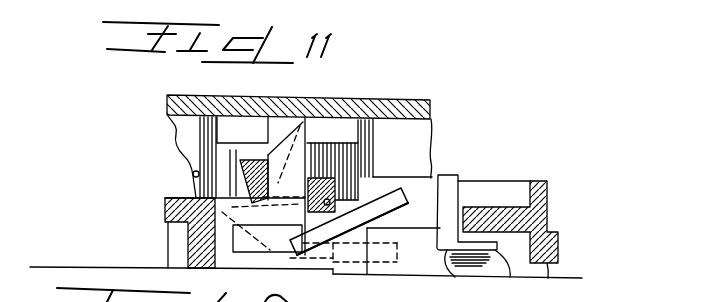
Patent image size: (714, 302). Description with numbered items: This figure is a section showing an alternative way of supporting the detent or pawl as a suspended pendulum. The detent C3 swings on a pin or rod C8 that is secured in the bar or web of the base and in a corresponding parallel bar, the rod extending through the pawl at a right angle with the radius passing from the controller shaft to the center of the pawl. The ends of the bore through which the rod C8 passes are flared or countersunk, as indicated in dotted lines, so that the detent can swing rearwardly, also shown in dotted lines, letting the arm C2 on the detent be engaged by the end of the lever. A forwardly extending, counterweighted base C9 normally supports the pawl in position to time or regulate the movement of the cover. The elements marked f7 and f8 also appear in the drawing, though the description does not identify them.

The arm C2 is at (436, 178).
The detent C3 is at (303, 122).
The pin or rod C8 is at (278, 180).
The counterweighted base C9 is at (233, 228).
The wedge cam f7 is at (240, 173).
The pivot block f8 is at (303, 206).